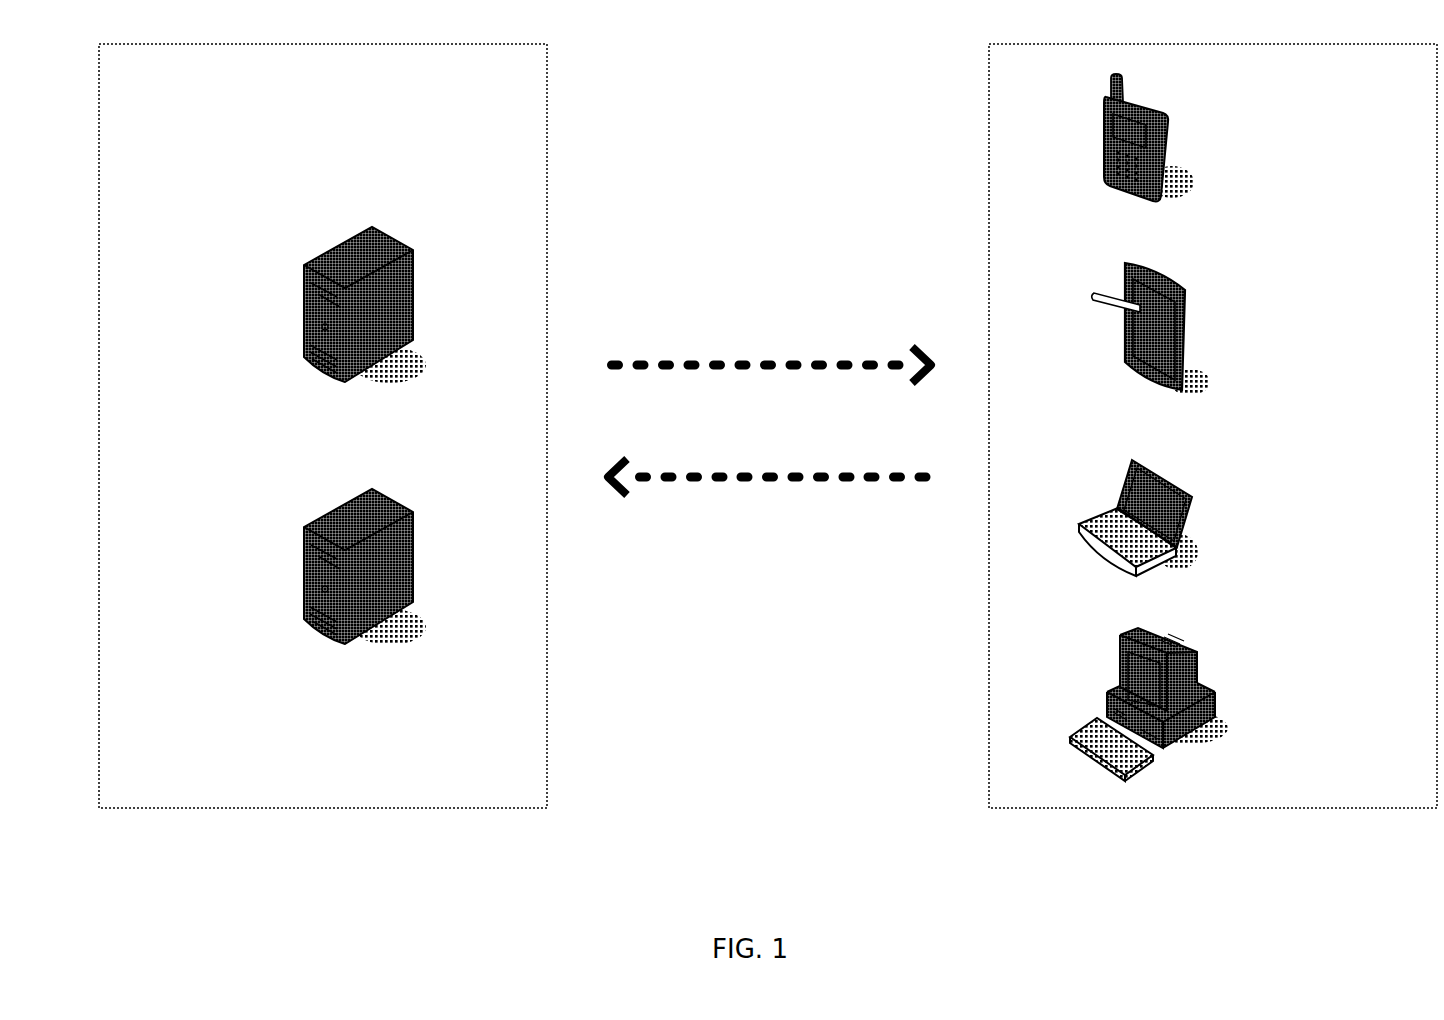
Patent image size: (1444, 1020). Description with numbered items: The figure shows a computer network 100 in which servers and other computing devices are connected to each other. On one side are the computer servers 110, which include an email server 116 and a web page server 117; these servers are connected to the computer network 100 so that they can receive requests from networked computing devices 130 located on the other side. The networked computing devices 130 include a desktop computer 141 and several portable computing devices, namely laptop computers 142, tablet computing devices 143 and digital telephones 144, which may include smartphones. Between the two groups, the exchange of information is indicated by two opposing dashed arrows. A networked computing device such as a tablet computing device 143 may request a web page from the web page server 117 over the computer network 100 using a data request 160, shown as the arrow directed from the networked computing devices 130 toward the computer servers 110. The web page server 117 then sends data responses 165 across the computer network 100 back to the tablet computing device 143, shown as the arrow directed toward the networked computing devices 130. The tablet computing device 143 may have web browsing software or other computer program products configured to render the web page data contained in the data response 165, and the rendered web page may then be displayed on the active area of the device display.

The computer network 100 is at (754, 172).
The computer servers 110 is at (338, 786).
The email server 116 is at (291, 537).
The web page server 117 is at (290, 302).
The networked computing devices 130 is at (1362, 788).
The desktop computer 141 is at (1238, 688).
The laptop computers 142 is at (1230, 510).
The tablet computing device 143 is at (1218, 331).
The digital telephones 144 is at (1204, 148).
The data request 160 is at (708, 520).
The data responses 165 is at (802, 333).